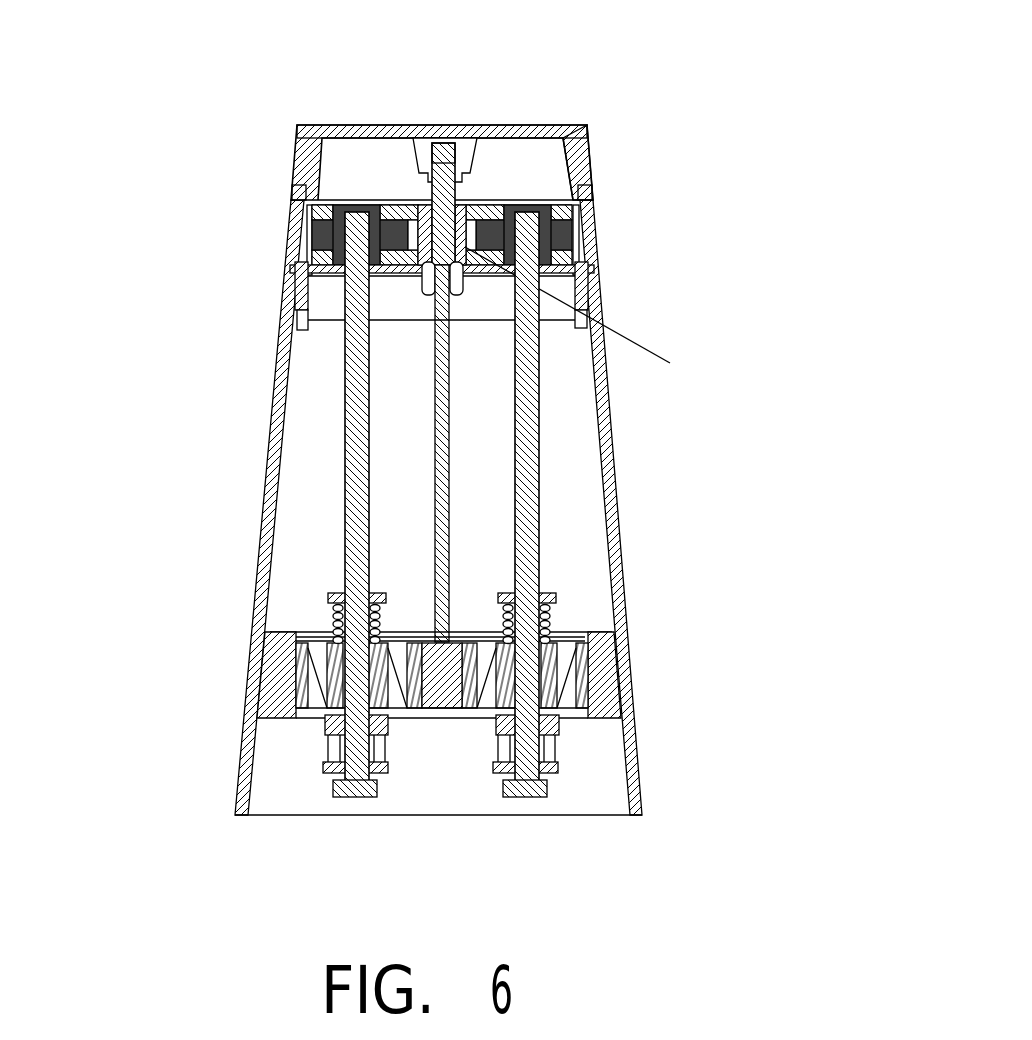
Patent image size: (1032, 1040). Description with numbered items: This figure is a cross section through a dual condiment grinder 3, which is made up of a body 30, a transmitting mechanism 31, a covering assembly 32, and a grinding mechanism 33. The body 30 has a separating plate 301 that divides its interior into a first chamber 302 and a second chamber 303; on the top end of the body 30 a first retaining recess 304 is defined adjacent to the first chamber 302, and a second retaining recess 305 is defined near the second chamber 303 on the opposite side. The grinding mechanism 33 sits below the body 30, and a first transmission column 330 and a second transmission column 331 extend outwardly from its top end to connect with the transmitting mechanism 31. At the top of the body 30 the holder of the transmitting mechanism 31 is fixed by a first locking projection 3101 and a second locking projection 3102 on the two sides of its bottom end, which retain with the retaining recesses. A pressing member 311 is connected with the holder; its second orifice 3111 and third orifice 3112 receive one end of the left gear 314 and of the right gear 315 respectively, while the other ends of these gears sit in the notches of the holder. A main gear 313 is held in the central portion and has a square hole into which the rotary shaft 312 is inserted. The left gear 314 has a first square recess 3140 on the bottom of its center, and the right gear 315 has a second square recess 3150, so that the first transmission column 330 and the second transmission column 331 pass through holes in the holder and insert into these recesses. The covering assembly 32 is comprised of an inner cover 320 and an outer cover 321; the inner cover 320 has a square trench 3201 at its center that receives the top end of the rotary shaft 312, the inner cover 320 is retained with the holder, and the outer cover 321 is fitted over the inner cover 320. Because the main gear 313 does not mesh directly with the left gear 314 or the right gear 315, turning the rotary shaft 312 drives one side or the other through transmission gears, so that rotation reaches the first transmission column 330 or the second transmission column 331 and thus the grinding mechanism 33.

The dual condiment grinder 3 is at (424, 454).
The body 30 is at (432, 507).
The separating plate 301 is at (435, 373).
The first chamber 302 is at (298, 590).
The second chamber 303 is at (577, 543).
The first retaining recess 304 is at (295, 322).
The second retaining recess 305 is at (607, 323).
The transmitting mechanism 31 is at (444, 182).
The first locking projection 3101 is at (290, 274).
The second locking projection 3102 is at (603, 272).
The pressing member 311 is at (587, 155).
The second orifice 3111 is at (290, 192).
The third orifice 3112 is at (595, 198).
The rotary shaft 312 is at (340, 132).
The main gear 313 is at (475, 207).
The left gear 314 is at (302, 232).
The first square recess 3140 is at (292, 208).
The right gear 315 is at (560, 235).
The second square recess 3150 is at (597, 210).
The covering assembly 32 is at (404, 122).
The inner cover 320 is at (386, 128).
The square trench 3201 is at (445, 141).
The outer cover 321 is at (481, 128).
The grinding mechanism 33 is at (445, 738).
The first transmission column 330 is at (352, 440).
The second transmission column 331 is at (540, 437).